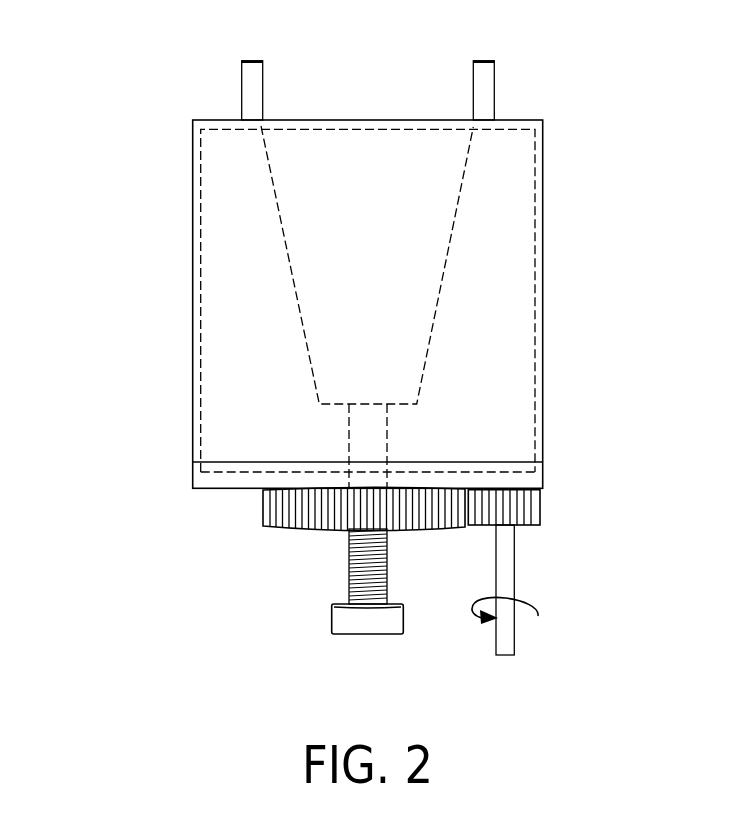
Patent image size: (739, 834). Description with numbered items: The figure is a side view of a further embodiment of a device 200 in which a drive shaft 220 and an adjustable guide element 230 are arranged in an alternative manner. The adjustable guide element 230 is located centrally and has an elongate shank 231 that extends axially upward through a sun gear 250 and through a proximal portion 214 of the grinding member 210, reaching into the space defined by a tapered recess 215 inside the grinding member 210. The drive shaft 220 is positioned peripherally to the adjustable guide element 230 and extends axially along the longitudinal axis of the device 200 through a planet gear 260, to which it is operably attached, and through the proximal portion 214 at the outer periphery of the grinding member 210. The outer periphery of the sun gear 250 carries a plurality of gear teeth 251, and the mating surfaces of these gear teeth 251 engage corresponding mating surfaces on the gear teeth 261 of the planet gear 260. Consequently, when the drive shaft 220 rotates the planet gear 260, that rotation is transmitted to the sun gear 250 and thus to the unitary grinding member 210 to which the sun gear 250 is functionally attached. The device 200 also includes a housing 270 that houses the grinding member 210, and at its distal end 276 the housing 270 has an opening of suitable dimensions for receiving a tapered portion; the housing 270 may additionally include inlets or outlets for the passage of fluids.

The device 200 is at (100, 82).
The grinding member 210 is at (540, 223).
The proximal portion 214 is at (200, 471).
The tapered recess 215 is at (443, 271).
The drive shaft 220 is at (515, 637).
The adjustable guide element 230 is at (349, 590).
The elongate shank 231 is at (387, 556).
The sun gear 250 is at (263, 508).
The gear teeth 251 is at (300, 517).
The planet gear 260 is at (540, 507).
The gear teeth 261 is at (528, 522).
The housing 270 is at (543, 357).
The distal end 276 is at (368, 120).